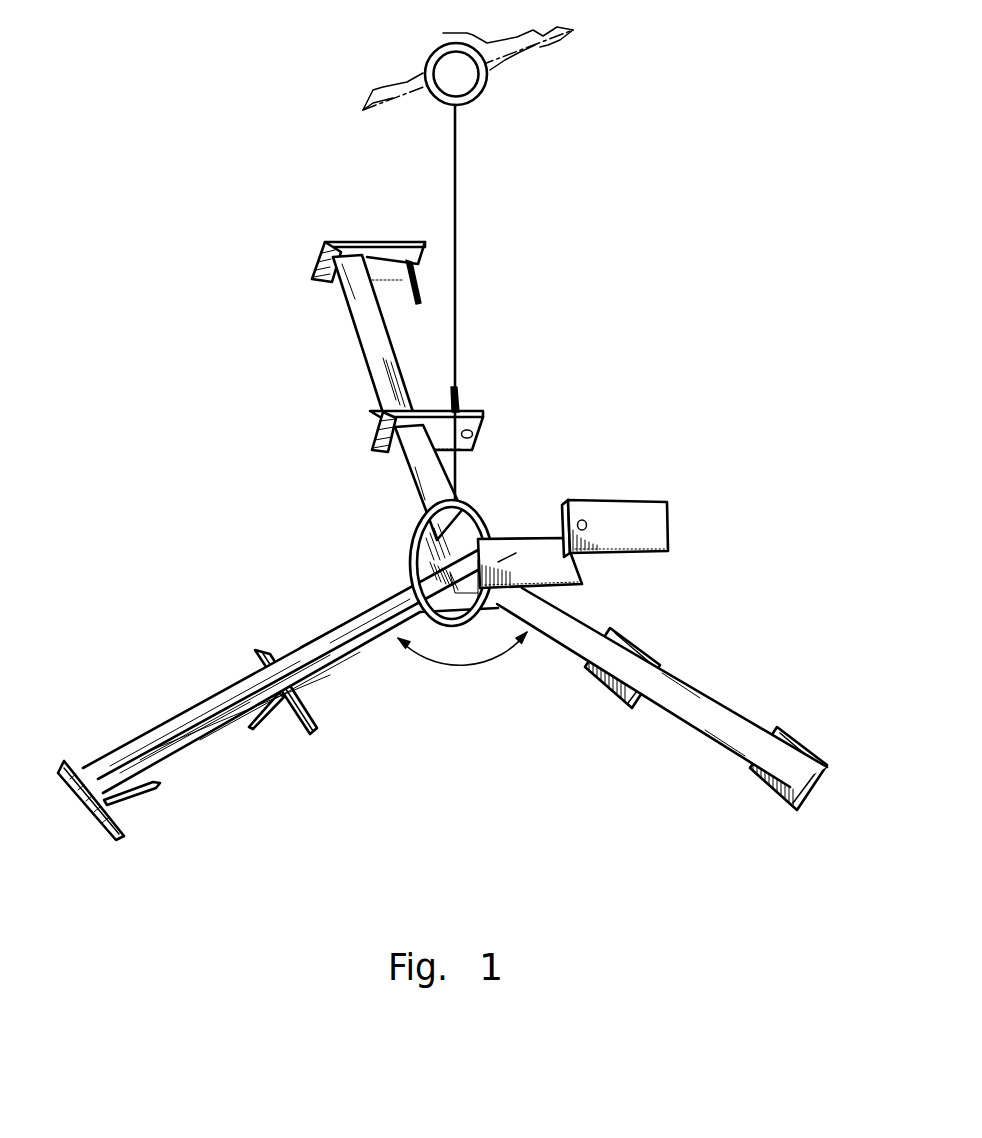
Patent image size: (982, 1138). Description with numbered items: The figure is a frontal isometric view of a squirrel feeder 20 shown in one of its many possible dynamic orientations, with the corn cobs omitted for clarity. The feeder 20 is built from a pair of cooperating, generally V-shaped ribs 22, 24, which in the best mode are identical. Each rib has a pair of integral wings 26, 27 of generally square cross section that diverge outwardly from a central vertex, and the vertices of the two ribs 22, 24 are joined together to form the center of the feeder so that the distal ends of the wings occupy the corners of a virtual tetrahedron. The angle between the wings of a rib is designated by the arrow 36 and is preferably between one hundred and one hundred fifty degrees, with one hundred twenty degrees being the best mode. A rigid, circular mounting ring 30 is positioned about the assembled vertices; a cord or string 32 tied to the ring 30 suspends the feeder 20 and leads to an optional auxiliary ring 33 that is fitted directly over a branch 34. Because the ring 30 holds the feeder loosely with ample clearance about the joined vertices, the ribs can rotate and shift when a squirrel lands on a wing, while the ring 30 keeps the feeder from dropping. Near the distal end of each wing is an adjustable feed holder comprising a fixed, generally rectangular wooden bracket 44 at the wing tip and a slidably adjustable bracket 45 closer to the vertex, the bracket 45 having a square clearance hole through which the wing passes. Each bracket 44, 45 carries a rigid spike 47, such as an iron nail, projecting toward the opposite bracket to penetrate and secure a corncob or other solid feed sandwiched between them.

The squirrel feeder 20 is at (442, 433).
The rib 22 is at (337, 615).
The rib 24 is at (353, 418).
The wing 26 is at (158, 738).
The wing 27 is at (712, 722).
The mounting ring 30 is at (480, 508).
The cord or string 32 is at (455, 220).
The auxiliary ring 33 is at (473, 98).
The branch 34 is at (537, 43).
The angle between wings 36 is at (462, 668).
The fixed bracket 44 is at (657, 520).
The slidably adjustable bracket 45 is at (312, 728).
The spike 47 is at (147, 789).